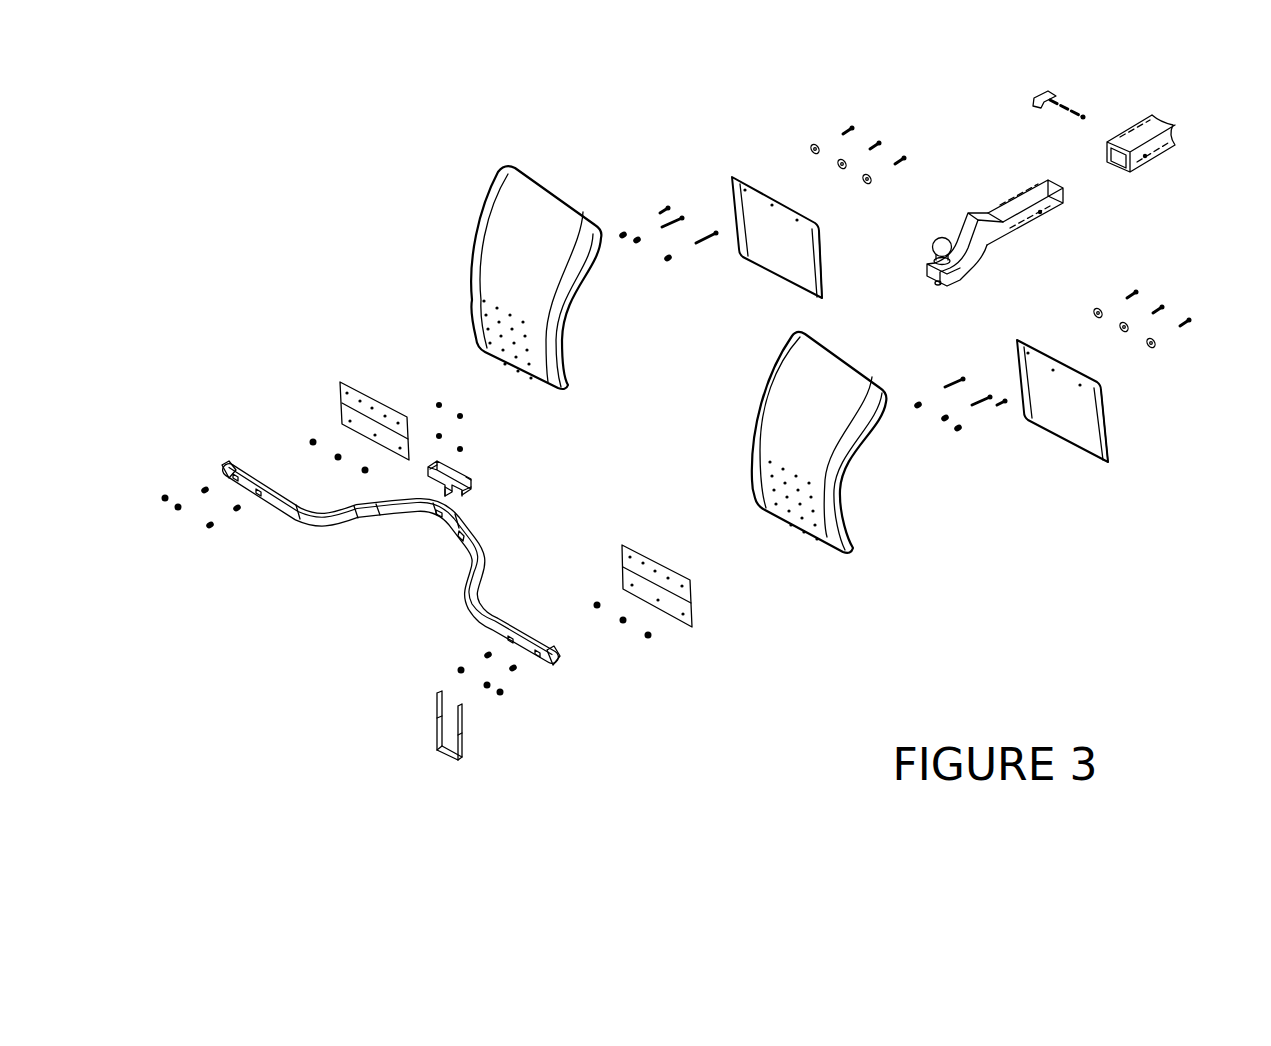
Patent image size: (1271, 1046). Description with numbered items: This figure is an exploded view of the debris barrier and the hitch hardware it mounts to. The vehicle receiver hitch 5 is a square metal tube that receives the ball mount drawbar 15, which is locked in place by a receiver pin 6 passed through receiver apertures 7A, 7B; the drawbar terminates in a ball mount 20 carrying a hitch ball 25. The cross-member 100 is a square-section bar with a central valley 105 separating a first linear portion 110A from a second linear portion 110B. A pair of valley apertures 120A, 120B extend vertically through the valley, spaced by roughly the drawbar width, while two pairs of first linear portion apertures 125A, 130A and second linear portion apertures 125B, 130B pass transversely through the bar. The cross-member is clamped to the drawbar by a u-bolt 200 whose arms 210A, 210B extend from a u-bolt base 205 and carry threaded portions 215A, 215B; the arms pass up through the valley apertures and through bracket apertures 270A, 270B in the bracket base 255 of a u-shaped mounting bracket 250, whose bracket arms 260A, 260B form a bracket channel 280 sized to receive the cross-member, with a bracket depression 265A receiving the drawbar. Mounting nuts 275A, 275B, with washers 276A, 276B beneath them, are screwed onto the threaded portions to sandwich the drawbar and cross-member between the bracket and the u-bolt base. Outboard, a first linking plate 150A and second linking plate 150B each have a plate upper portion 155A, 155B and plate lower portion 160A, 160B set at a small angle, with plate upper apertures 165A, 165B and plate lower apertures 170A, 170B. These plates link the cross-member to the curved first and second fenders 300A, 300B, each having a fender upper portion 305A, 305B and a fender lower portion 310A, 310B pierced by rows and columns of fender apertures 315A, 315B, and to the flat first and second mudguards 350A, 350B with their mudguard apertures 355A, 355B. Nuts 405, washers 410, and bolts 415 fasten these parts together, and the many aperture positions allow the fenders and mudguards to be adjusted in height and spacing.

The vehicle receiver hitch 5 is at (1157, 168).
The receiver pin 6 is at (1035, 103).
The receiver aperture 7A is at (1042, 214).
The receiver aperture 7B is at (1146, 160).
The ball mount drawbar 15 is at (1028, 228).
The ball mount 20 is at (969, 274).
The hitch ball 25 is at (938, 238).
The cross-member 100 is at (221, 455).
The valley 105 is at (412, 554).
The first linear portion 110A is at (278, 512).
The second linear portion 110B is at (487, 630).
The valley aperture 120A is at (430, 518).
The valley aperture 120B is at (460, 540).
The first linear portion aperture 125A is at (233, 476).
The second linear portion aperture 125B is at (505, 643).
The first linear portion aperture 130A is at (258, 497).
The second linear portion aperture 130B is at (538, 662).
The first linking plate 150A is at (290, 347).
The second linking plate 150B is at (727, 636).
The plate upper portion 155A is at (338, 391).
The plate upper portion 155B is at (692, 593).
The plate lower portion 160A is at (340, 409).
The plate lower portion 160B is at (693, 618).
The plate upper aperture 165A is at (366, 400).
The plate upper aperture 165B is at (663, 573).
The plate lower aperture 170A is at (360, 430).
The plate lower aperture 170B is at (667, 608).
The u-bolt 200 is at (477, 789).
The u-bolt base 205 is at (445, 757).
The u-bolt arm 210A is at (433, 688).
The u-bolt arm 210B is at (466, 701).
The threaded portion 215A is at (436, 714).
The threaded portion 215B is at (463, 734).
The mounting bracket 250 is at (546, 509).
The bracket base 255 is at (430, 478).
The bracket arm 260A is at (462, 494).
The bracket arm 260B is at (472, 485).
The bracket depression 265A is at (447, 496).
The bracket aperture 270A is at (443, 465).
The bracket aperture 270B is at (473, 479).
The mounting nut 275A is at (443, 405).
The mounting nut 275B is at (464, 416).
The washer 276A is at (443, 436).
The washer 276B is at (464, 449).
The bracket channel 280 is at (470, 495).
The first fender 300A is at (464, 213).
The second fender 300B is at (877, 544).
The fender upper portion 305A is at (557, 277).
The fender upper portion 305B is at (843, 435).
The fender lower portion 310A is at (546, 353).
The fender lower portion 310B is at (830, 516).
The fender apertures 315A is at (505, 307).
The fender apertures 315B is at (788, 471).
The first mudguard 350A is at (716, 170).
The second mudguard 350B is at (1132, 449).
The mudguard apertures 355A is at (759, 201).
The mudguard apertures 355B is at (1066, 378).
The nuts 405 is at (155, 490).
The washers 410 is at (806, 138).
The bolts 415 is at (837, 118).